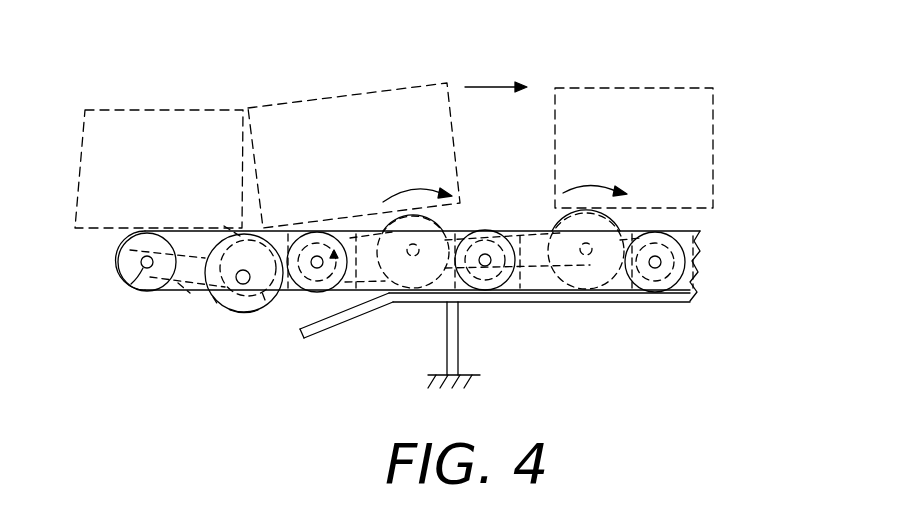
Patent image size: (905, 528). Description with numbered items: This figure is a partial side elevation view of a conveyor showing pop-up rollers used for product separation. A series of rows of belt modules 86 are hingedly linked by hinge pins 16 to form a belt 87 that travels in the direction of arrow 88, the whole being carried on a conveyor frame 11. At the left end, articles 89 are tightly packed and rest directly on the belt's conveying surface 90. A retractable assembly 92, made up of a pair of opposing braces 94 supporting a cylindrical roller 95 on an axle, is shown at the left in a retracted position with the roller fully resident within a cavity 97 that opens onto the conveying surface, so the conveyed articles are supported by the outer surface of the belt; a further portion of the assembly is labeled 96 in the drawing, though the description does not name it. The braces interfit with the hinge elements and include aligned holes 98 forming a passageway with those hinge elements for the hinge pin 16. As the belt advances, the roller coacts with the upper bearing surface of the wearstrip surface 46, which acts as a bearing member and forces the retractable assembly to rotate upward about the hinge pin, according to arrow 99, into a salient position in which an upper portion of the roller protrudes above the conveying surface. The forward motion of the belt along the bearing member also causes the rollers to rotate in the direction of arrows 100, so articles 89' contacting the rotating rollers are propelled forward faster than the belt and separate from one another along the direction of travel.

The belt modules 86 is at (700, 232).
The belt 87 is at (138, 242).
The arrow 88 is at (488, 87).
The articles 89 is at (267, 132).
The articles 89' is at (634, 111).
The conveying surface 90 is at (242, 233).
The retractable assembly 92 is at (180, 290).
The braces 94 is at (213, 297).
The cylindrical roller 95 is at (243, 313).
The wheel portion 96 is at (265, 300).
The cavity 97 is at (224, 226).
The aligned holes 98 is at (131, 285).
The arrow 99 is at (355, 253).
The arrows 100 is at (432, 185).
The hinge pins 16 is at (490, 265).
The conveyor frame 11 is at (455, 360).
The wearstrip surface 46 is at (633, 300).